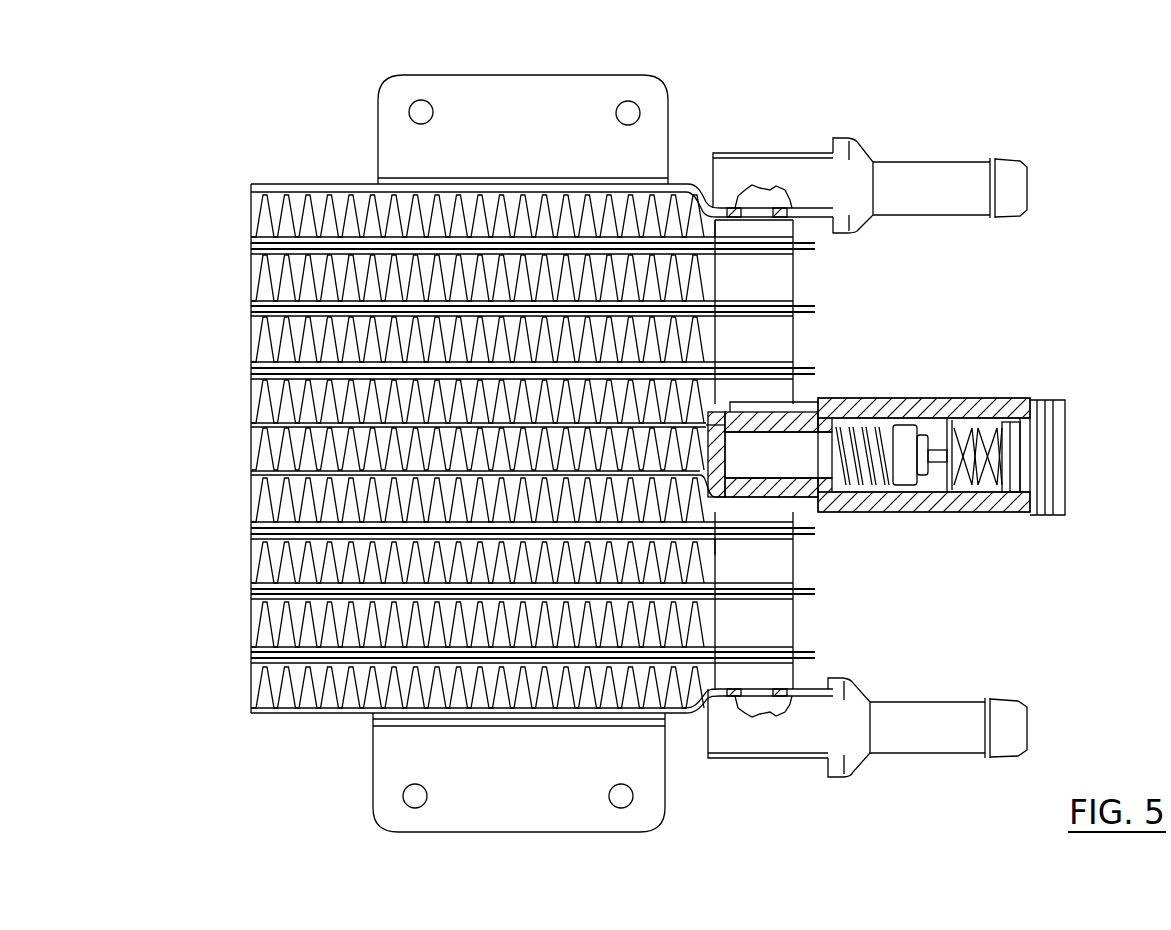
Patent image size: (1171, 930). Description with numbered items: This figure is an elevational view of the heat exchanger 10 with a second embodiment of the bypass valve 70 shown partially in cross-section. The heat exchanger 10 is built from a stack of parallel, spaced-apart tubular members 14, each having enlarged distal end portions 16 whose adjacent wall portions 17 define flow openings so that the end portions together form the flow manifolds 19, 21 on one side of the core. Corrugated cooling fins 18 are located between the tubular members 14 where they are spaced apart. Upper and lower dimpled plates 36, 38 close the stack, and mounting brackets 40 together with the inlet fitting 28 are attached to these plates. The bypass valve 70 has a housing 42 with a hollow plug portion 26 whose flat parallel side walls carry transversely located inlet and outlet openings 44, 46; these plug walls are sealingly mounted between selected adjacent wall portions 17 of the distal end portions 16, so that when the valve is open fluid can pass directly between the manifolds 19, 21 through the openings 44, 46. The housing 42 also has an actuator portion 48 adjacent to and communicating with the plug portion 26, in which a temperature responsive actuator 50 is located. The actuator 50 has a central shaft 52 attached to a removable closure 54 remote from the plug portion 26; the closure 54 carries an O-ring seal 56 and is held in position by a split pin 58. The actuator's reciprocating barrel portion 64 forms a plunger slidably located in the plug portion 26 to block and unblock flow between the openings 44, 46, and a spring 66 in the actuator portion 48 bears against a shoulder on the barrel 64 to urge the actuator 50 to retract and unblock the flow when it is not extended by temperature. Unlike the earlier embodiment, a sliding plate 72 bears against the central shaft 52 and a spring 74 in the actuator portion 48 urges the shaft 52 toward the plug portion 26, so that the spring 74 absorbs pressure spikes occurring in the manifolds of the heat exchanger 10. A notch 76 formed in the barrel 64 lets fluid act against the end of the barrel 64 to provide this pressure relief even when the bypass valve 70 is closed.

The heat exchanger 10 is at (760, 111).
The tubular members 14 is at (818, 250).
The enlarged distal end portions 16 is at (795, 268).
The wall portions 17 is at (742, 283).
The corrugated cooling fins 18 is at (252, 225).
The flow manifold 19 is at (896, 269).
The flow manifold 21 is at (876, 597).
The hollow plug portion 26 is at (786, 490).
The inlet fitting 28 is at (923, 162).
The dimpled plate 36 is at (347, 189).
The dimpled plate 38 is at (338, 709).
The mounting brackets 40 is at (378, 118).
The housing 42 is at (978, 505).
The inlet opening 44 is at (755, 418).
The outlet opening 46 is at (753, 490).
The actuator portion 48 is at (1005, 505).
The temperature responsive actuator 50 is at (903, 426).
The central shaft 52 is at (938, 448).
The removable closure 54 is at (1061, 487).
The O-ring seal 56 is at (1021, 418).
The split pin 58 is at (1038, 508).
The barrel portion 64 is at (825, 461).
The spring 66 is at (865, 427).
The bypass valve 70 is at (1066, 368).
The sliding plate 72 is at (947, 480).
The spring 74 is at (967, 488).
The notch 76 is at (756, 452).